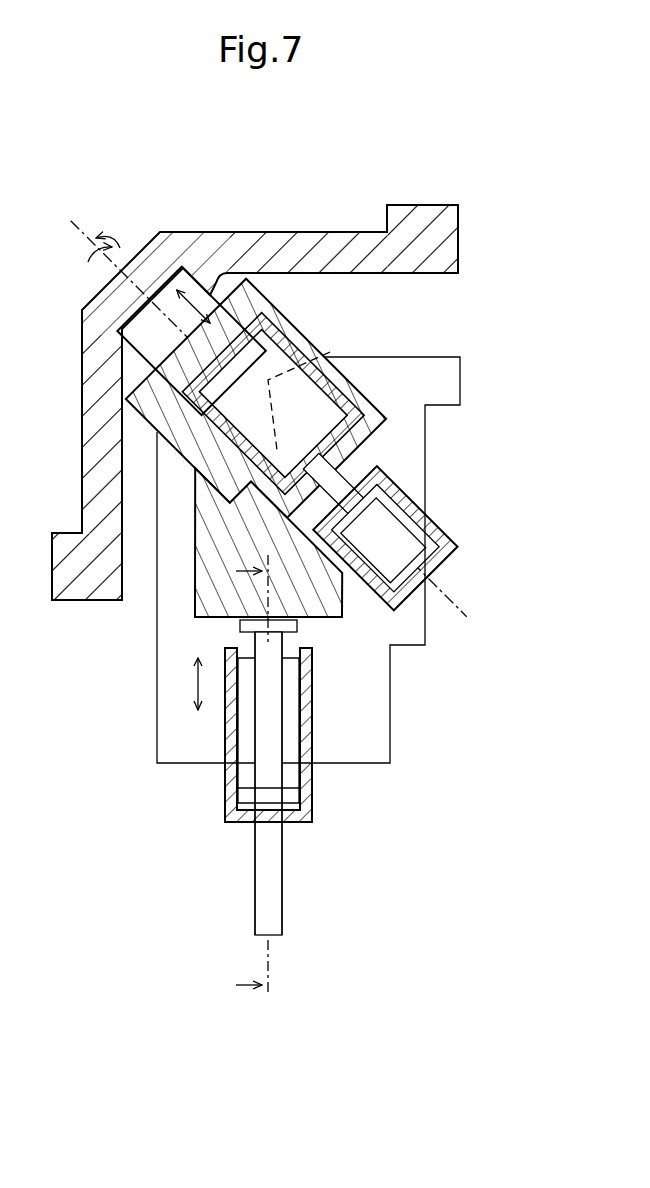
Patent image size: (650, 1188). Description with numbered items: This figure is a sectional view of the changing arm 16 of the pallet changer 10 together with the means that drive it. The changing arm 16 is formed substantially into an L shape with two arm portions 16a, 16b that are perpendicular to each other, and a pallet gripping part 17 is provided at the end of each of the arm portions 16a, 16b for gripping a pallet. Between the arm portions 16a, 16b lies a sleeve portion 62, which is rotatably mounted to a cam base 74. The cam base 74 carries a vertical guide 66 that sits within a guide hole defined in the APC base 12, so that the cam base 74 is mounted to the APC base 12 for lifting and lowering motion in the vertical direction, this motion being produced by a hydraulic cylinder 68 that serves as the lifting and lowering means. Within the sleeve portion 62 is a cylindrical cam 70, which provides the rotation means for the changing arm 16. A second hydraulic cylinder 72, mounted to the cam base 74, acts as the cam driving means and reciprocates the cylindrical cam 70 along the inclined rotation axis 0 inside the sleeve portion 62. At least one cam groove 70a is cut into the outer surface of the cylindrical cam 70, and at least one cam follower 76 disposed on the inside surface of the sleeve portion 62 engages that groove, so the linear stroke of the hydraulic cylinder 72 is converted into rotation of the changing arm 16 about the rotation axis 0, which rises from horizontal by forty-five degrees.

The pallet changer 10 is at (124, 172).
The rotation axis 0 is at (262, 410).
The APC base 12 is at (385, 697).
The changing arm 16 is at (178, 245).
The arm portion 16a is at (300, 246).
The arm portion 16b is at (82, 440).
The pallet gripping part 17 is at (445, 228).
The sleeve portion 62 is at (350, 404).
The vertical guide 66 is at (279, 889).
The hydraulic cylinder 68 is at (308, 792).
The cylindrical cam 70 is at (338, 456).
The cam groove 70a is at (330, 352).
The hydraulic cylinder 72 is at (440, 540).
The cam base 74 is at (203, 612).
The cam follower 76 is at (235, 343).